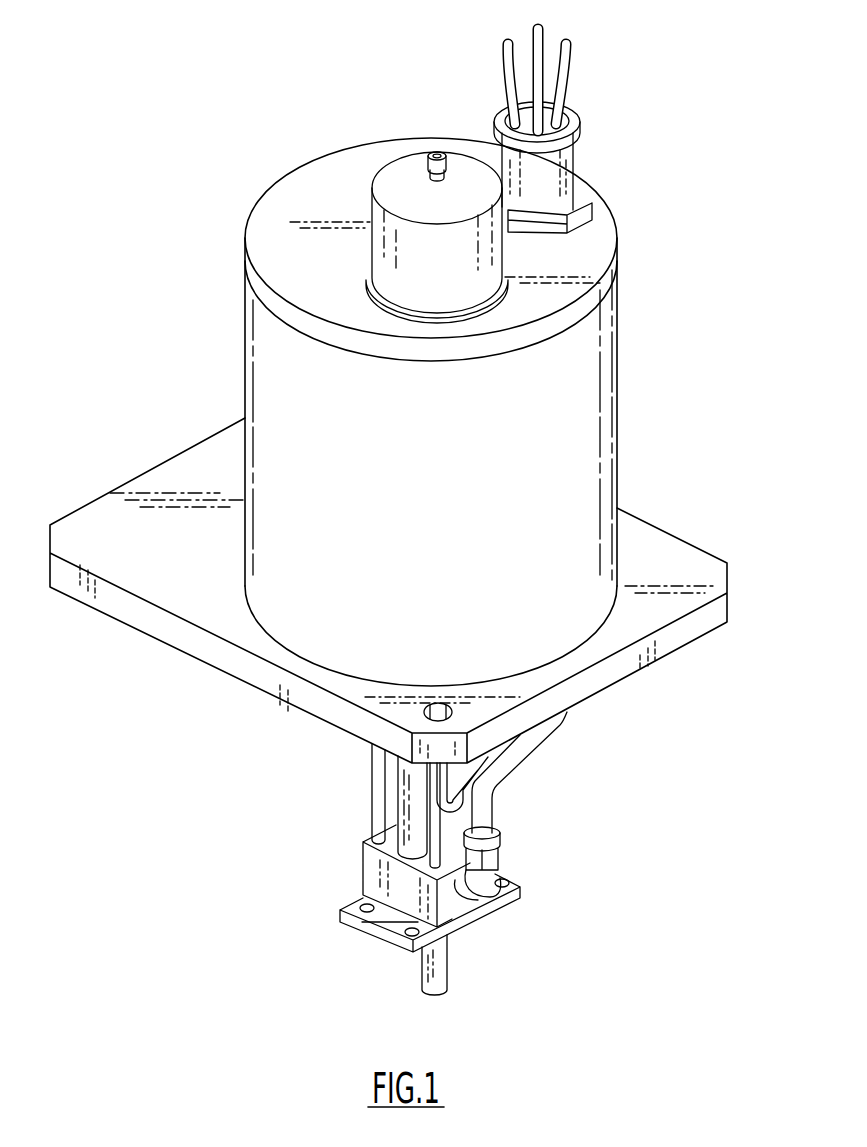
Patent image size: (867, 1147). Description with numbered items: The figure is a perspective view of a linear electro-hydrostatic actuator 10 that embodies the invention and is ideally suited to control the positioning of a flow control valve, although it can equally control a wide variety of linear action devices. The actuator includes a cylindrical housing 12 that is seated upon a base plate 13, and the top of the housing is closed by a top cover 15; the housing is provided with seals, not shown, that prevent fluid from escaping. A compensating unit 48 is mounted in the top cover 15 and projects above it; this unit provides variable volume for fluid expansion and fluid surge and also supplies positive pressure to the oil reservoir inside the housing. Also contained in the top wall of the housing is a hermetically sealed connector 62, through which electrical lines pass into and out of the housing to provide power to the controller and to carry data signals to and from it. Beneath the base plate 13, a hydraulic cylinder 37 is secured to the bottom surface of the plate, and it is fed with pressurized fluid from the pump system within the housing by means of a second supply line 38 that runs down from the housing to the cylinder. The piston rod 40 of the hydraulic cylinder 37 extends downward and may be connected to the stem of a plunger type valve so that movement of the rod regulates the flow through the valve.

The linear electro-hydrostatic actuator 10 is at (662, 398).
The cylindrical housing 12 is at (625, 315).
The base plate 13 is at (700, 534).
The top cover 15 is at (265, 222).
The compensating unit 48 is at (384, 143).
The hermetically sealed connector 62 is at (577, 162).
The hydraulic cylinder 37 is at (354, 861).
The second supply line 38 is at (496, 811).
The piston rod 40 is at (448, 967).